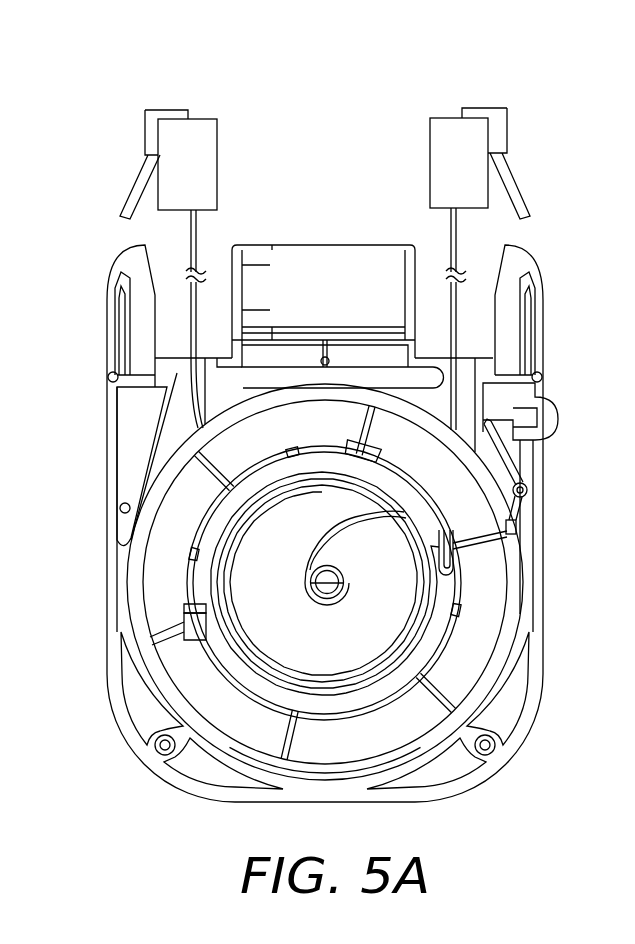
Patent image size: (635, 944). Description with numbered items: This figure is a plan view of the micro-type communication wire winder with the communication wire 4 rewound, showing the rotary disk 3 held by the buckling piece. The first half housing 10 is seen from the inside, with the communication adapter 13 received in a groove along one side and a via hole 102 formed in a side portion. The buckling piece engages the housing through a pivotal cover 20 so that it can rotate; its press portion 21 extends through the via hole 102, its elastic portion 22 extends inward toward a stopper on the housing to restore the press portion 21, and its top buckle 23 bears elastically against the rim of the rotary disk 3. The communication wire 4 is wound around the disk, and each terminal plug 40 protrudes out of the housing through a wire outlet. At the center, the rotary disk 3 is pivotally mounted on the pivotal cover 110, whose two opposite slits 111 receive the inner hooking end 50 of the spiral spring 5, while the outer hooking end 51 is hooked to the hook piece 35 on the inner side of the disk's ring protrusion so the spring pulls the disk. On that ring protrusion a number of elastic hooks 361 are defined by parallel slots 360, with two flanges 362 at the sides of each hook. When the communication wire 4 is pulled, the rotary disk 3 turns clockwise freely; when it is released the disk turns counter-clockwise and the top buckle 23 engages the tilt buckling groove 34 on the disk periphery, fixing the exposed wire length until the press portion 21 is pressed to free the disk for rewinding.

The rotary disk 3 is at (140, 562).
The communication wire 4 is at (455, 247).
The spiral spring 5 is at (318, 683).
The first half housing 10 is at (116, 598).
The communication adapter 13 is at (328, 262).
The pivotal cover 20 is at (527, 490).
The press portion 21 is at (548, 418).
The elastic portion 22 is at (503, 458).
The top buckle 23 is at (516, 512).
The tilt buckling groove 34 is at (512, 522).
The hook piece 35 is at (465, 557).
The terminal plug 40 is at (207, 172).
The inner hooking end 50 is at (323, 578).
The outer hooking end 51 is at (500, 548).
The via hole 102 is at (543, 395).
The pivotal cover 110 is at (342, 571).
The slits 111 is at (345, 580).
The parallel slots 360 is at (205, 642).
The elastic hooks 361 is at (185, 614).
The flanges 362 is at (205, 662).